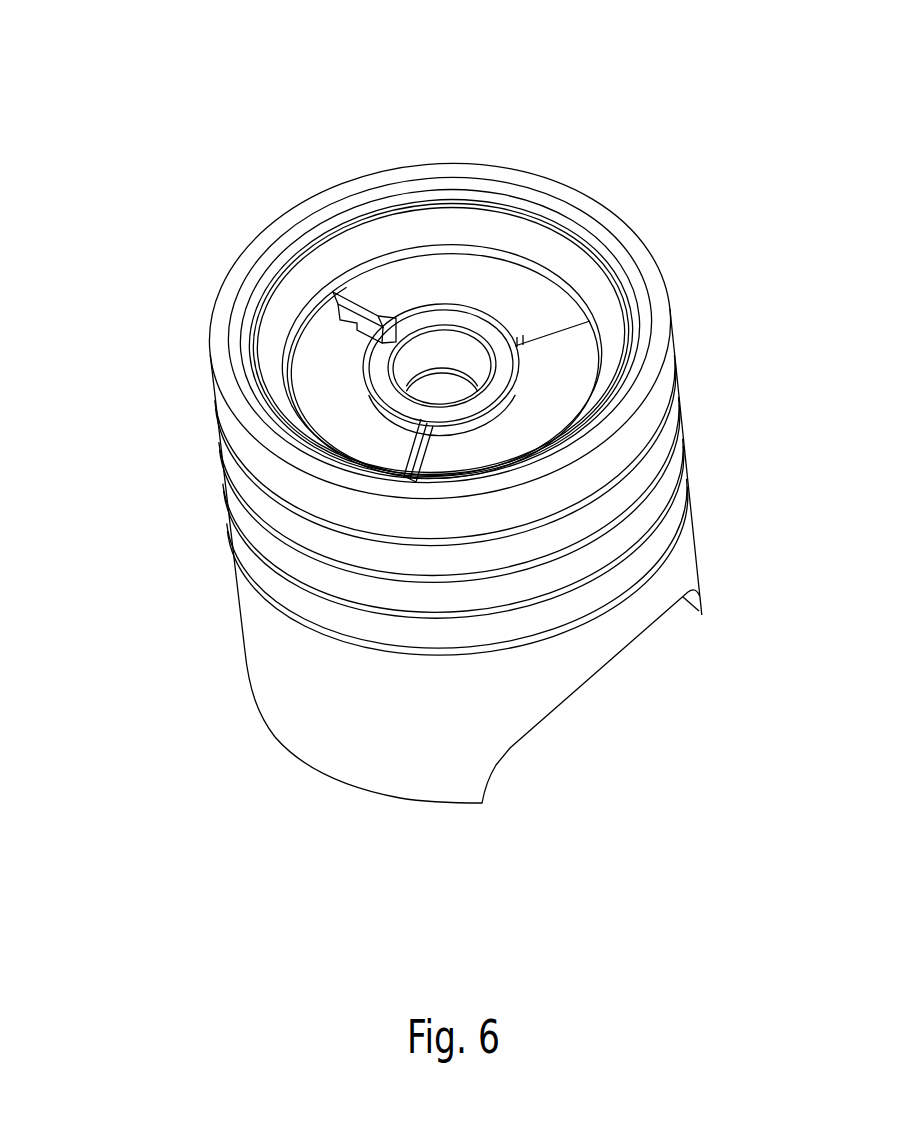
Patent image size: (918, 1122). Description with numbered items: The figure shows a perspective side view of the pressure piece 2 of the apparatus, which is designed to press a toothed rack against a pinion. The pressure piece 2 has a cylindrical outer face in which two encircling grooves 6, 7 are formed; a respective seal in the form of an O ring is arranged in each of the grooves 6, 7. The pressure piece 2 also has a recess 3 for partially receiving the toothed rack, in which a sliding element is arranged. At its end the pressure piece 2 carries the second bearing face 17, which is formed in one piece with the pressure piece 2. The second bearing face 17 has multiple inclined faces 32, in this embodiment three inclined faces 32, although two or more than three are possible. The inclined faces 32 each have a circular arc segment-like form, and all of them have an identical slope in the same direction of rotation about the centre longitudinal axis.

The pressure piece 2 is at (755, 92).
The recess 3 is at (614, 712).
The encircling groove 6 is at (693, 458).
The encircling groove 7 is at (693, 392).
The second bearing face 17 is at (446, 240).
The inclined faces 32 is at (380, 280).